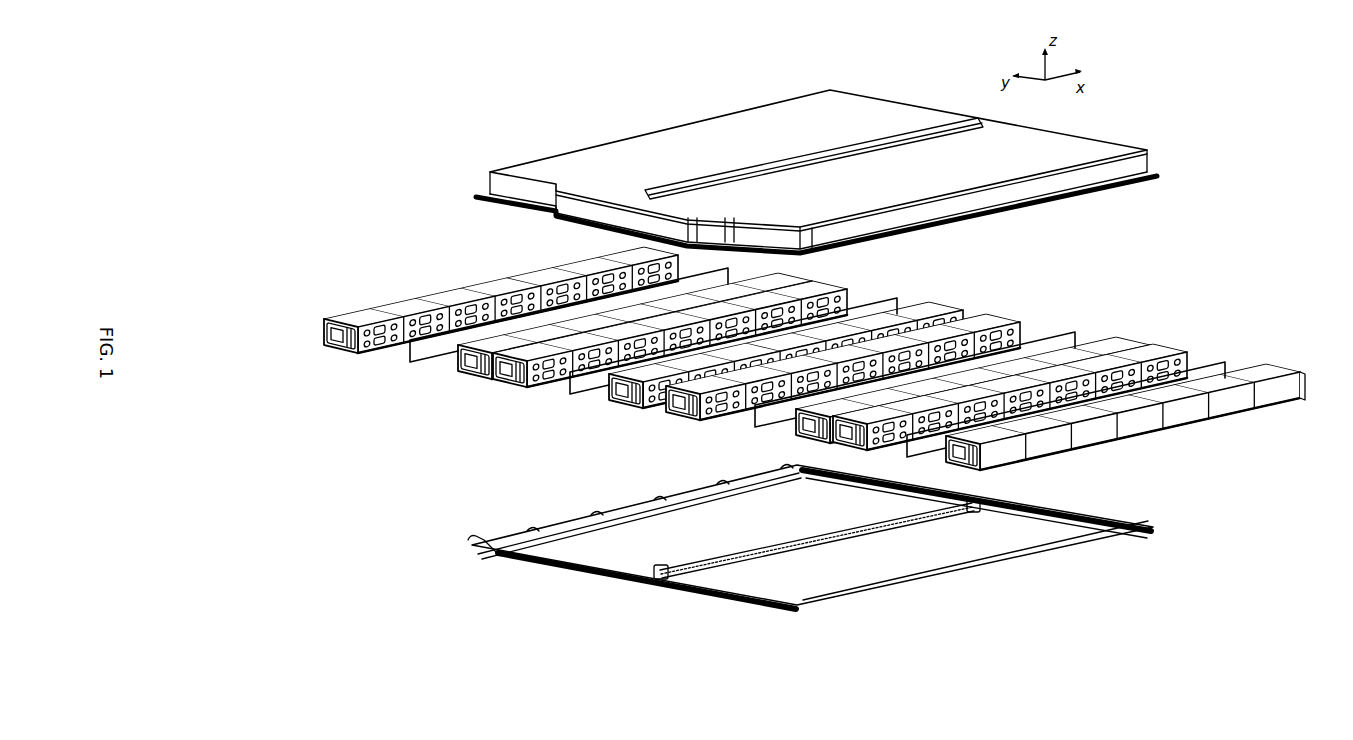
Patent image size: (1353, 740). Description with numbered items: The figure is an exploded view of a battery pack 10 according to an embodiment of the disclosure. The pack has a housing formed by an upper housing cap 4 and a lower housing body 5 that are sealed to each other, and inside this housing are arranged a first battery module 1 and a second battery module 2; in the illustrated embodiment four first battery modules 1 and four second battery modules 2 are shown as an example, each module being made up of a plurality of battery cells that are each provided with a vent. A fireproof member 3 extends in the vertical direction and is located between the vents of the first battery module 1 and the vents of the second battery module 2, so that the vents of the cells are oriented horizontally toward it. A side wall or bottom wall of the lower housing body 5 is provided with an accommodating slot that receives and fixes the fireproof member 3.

The battery pack 10 is at (360, 173).
The first battery module 1 is at (814, 362).
The second battery module 2 is at (472, 370).
The fireproof member 3 is at (420, 368).
The upper housing cap 4 is at (631, 160).
The lower housing body 5 is at (918, 548).